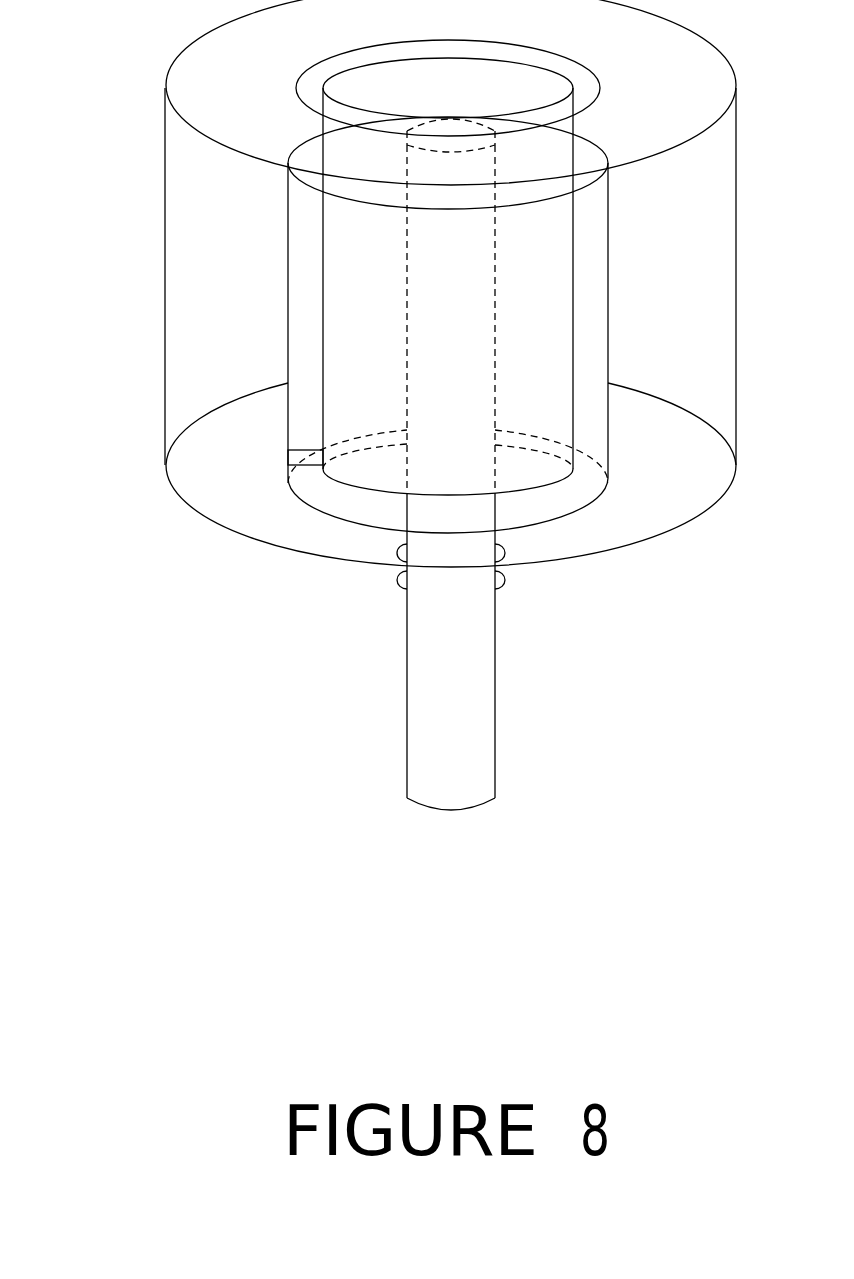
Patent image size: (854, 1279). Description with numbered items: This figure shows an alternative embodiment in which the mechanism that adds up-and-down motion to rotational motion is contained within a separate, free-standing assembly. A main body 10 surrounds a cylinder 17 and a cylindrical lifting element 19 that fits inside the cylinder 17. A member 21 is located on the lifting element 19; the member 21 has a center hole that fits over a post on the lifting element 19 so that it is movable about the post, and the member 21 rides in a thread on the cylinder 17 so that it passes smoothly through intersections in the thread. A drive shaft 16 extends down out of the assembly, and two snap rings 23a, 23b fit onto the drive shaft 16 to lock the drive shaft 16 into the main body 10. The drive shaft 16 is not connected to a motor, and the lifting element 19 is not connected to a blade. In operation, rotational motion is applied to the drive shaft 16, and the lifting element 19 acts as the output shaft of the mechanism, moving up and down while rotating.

The main body 10 is at (152, 279).
The cylinder 17 is at (618, 275).
The lifting element 19 is at (323, 248).
The member 21 is at (288, 467).
The drive shaft 16 is at (505, 802).
The snap ring 23a is at (515, 549).
The snap ring 23b is at (513, 590).